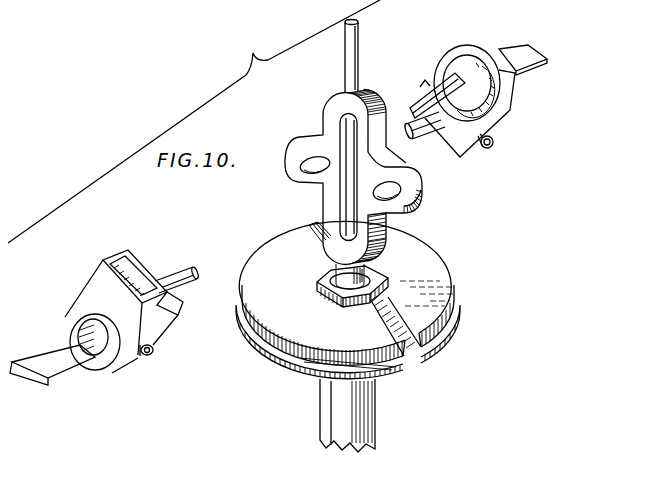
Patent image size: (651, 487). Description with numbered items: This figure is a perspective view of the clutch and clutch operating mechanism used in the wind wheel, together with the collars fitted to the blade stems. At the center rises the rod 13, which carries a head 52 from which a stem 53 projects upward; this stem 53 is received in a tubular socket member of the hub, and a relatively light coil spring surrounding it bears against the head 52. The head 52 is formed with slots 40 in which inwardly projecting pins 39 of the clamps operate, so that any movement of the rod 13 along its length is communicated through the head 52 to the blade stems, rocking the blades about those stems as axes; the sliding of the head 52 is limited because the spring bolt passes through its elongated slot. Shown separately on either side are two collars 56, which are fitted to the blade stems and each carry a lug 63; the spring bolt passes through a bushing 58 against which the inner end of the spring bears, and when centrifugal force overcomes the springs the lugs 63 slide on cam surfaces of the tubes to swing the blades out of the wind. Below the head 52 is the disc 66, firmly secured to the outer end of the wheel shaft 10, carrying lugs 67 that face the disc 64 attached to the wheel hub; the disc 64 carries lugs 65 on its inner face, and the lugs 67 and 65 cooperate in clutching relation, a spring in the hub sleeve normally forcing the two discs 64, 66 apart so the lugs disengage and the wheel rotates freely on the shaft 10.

The stem 53 is at (346, 49).
The head 52 is at (328, 113).
The slots 40 is at (307, 168).
The pins 39 is at (177, 273).
The lugs 63 is at (42, 345).
The collars 56 is at (95, 277).
The bushing 58 is at (72, 325).
The disc 66 is at (271, 238).
The lugs 67 is at (318, 236).
The rod 13 is at (335, 278).
The shaft 10 is at (366, 279).
The disc 64 is at (277, 362).
The lugs 65 is at (413, 348).